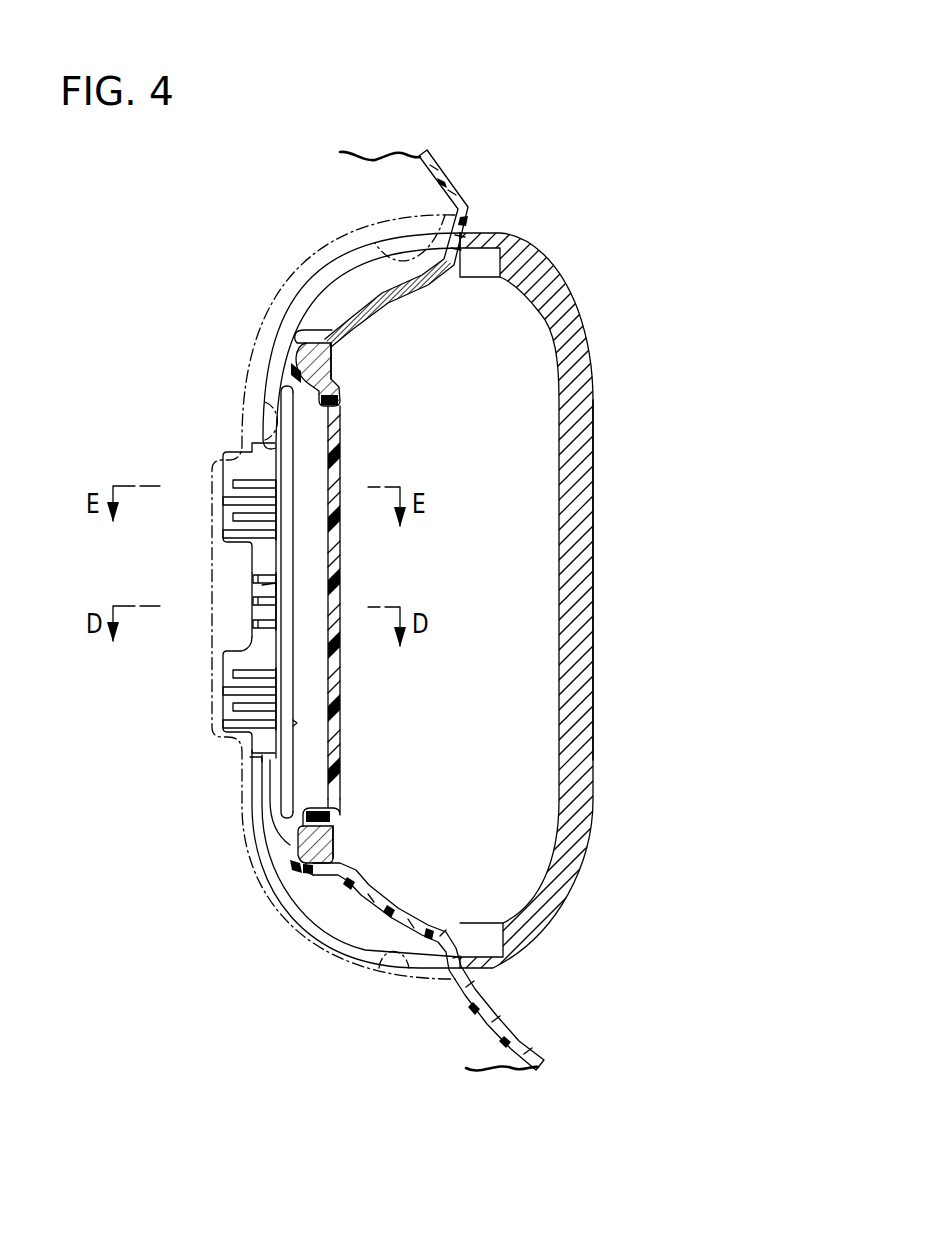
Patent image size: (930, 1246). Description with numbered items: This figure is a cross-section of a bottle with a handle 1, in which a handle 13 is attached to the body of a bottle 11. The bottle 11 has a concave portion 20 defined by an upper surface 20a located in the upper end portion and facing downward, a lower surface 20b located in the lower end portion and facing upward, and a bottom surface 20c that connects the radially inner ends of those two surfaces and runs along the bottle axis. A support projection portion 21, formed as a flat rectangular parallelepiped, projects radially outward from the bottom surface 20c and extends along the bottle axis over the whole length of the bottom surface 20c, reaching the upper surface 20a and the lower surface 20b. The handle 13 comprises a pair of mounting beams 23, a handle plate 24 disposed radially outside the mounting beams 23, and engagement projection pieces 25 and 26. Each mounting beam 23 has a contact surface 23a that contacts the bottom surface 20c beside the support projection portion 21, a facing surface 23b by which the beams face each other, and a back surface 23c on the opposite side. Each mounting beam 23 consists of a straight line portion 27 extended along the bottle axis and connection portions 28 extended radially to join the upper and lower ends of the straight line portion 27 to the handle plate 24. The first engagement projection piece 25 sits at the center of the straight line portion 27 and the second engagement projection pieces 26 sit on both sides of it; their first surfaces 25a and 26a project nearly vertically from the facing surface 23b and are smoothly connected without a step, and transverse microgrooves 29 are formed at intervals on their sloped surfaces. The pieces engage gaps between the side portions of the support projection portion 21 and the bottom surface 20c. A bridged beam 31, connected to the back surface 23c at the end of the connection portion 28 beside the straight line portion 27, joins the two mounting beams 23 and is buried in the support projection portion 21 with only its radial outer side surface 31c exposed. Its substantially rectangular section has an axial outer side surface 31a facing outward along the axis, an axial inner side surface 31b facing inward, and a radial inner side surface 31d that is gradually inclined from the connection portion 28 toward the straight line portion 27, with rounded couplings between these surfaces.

The bottle with a handle 1 is at (706, 96).
The bottle 11 is at (438, 152).
The handle 13 is at (526, 232).
The concave portion 20 is at (548, 1034).
The upper surface 20a is at (445, 215).
The lower surface 20b is at (400, 968).
The bottom surface 20c is at (262, 403).
The support projection portion 21 is at (352, 546).
The mounting beams 23 is at (150, 541).
The contact surface 23a is at (262, 585).
The facing surface 23b is at (250, 757).
The back surface 23c is at (297, 723).
The handle plate 24 is at (598, 628).
The first engagement projection piece 25 is at (254, 603).
The first surface of the first engagement projection piece 25a is at (280, 605).
The second engagement projection pieces 26 is at (214, 470).
The first surface of the second engagement projection piece 26a is at (278, 497).
The straight line portion 27 is at (306, 445).
The connection portion 28 is at (297, 275).
The transverse microgrooves 29 is at (235, 530).
The bridged beam 31 is at (300, 358).
The axial outer side surface 31a is at (317, 342).
The axial inner side surface 31b is at (335, 409).
The radial outer side surface 31c is at (340, 362).
The radial inner side surface 31d is at (297, 372).